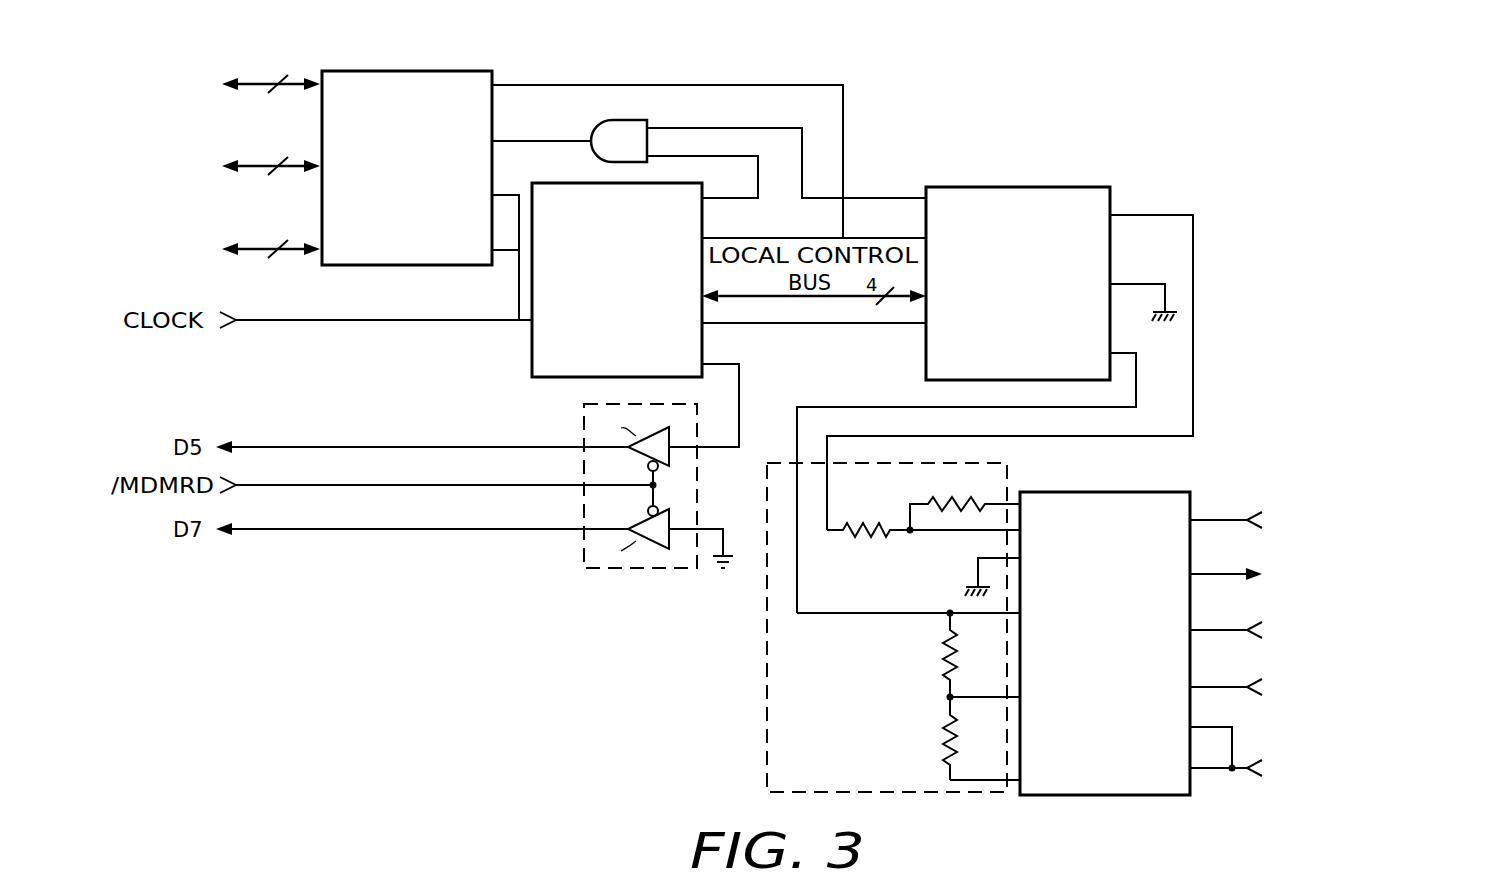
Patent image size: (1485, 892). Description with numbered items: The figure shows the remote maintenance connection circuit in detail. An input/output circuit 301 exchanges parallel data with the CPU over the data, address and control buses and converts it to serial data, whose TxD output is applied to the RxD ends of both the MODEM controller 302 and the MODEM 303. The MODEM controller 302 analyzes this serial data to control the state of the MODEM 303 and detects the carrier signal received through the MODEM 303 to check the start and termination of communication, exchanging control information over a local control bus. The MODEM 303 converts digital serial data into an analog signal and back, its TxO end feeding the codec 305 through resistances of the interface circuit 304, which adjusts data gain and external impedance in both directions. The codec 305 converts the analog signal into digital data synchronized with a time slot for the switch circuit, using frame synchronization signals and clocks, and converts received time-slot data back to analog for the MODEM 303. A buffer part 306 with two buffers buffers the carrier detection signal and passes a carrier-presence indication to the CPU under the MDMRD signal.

The input/output circuit 301 is at (405, 71).
The MODEM controller 302 is at (528, 351).
The MODEM 303 is at (1007, 187).
The interface circuit 304 is at (767, 698).
The codec 305 is at (1103, 492).
The buffer part 306 is at (641, 568).